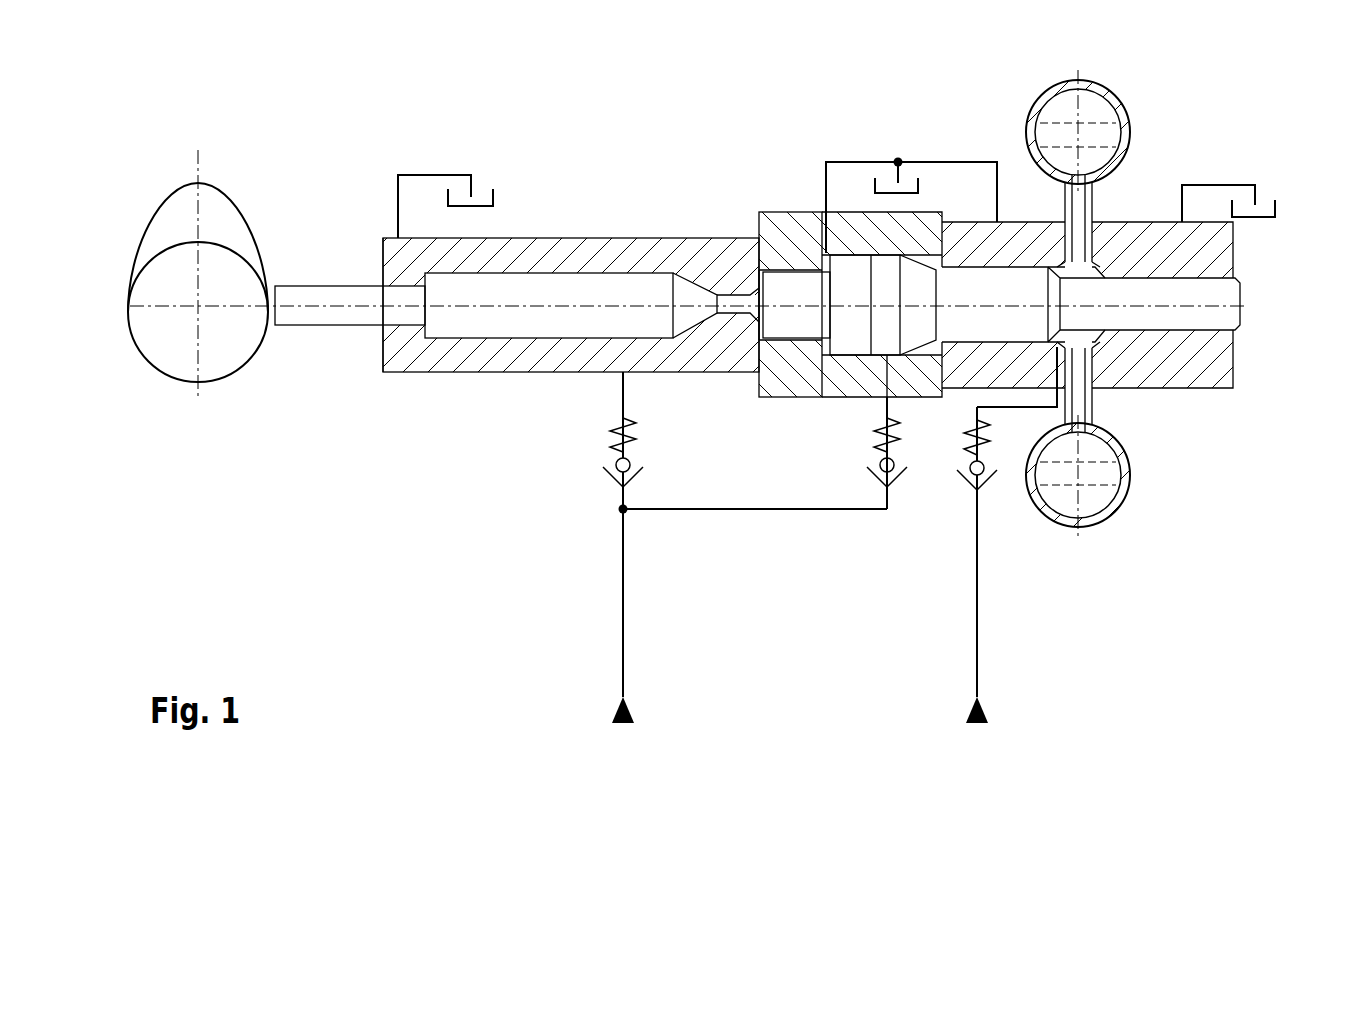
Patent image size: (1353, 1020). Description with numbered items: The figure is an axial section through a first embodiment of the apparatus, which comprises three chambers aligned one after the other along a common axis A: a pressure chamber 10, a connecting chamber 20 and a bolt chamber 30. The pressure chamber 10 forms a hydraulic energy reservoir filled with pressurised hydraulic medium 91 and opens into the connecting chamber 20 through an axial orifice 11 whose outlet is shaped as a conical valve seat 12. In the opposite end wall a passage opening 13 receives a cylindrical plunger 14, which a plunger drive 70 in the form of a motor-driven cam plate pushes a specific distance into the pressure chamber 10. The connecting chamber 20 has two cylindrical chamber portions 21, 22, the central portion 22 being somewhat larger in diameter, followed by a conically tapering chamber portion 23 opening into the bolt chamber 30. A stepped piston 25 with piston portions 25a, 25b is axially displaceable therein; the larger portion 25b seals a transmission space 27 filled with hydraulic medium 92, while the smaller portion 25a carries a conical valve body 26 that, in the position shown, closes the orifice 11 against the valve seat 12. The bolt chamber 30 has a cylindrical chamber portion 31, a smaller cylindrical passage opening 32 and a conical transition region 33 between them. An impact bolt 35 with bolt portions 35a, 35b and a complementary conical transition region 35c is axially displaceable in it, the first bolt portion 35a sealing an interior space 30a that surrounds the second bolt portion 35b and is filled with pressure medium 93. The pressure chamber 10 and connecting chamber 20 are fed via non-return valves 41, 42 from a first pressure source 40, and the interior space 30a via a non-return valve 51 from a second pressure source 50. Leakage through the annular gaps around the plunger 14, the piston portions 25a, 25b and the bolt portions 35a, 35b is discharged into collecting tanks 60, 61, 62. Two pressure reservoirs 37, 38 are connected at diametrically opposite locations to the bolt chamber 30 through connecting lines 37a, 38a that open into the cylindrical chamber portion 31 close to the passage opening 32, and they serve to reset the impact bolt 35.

The pressure chamber 10 is at (571, 326).
The orifice 11 is at (727, 303).
The conical valve seat 12 is at (752, 312).
The passage opening 13 is at (410, 340).
The cylindrical plunger 14 is at (355, 295).
The connecting chamber 20 is at (820, 337).
The cylindrical chamber portion 21 is at (758, 210).
The cylindrical chamber portion 22 is at (850, 272).
The conically tapering chamber portion 23 is at (920, 272).
The stepped piston 25 is at (847, 265).
The piston portion 25a is at (790, 325).
The piston portion 25b is at (847, 330).
The conical valve body 26 is at (757, 345).
The transmission space 27 is at (918, 285).
The bolt chamber 30 is at (1095, 295).
The interior space 30a is at (1093, 270).
The cylindrical chamber portion 31 is at (1012, 283).
The cylindrical passage opening 32 is at (1153, 333).
The transition region 33 is at (1098, 342).
The impact bolt 35 is at (1134, 300).
The bolt portion 35a is at (988, 250).
The bolt portion 35b is at (1187, 317).
The transition region 35c is at (1045, 297).
The pressure reservoir 37 is at (1083, 115).
The connecting line 37a is at (1090, 215).
The pressure reservoir 38 is at (1097, 499).
The connecting line 38a is at (1093, 400).
The first pressure source 40 is at (712, 547).
The non-return valve 41 is at (617, 483).
The non-return valve 42 is at (885, 490).
The second pressure source 50 is at (1015, 565).
The non-return valve 51 is at (980, 490).
The collecting tank 60 is at (487, 189).
The collecting tank 61 is at (892, 180).
The collecting tank 62 is at (1265, 200).
The plunger drive 70 is at (150, 277).
The hydraulic medium 91 is at (593, 323).
The hydraulic medium 92 is at (907, 323).
The pressure medium 93 is at (1092, 155).
The axis A is at (465, 310).